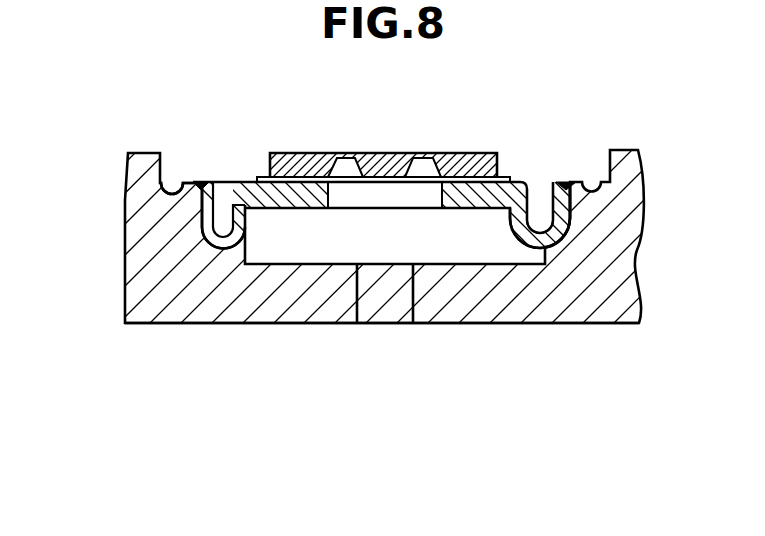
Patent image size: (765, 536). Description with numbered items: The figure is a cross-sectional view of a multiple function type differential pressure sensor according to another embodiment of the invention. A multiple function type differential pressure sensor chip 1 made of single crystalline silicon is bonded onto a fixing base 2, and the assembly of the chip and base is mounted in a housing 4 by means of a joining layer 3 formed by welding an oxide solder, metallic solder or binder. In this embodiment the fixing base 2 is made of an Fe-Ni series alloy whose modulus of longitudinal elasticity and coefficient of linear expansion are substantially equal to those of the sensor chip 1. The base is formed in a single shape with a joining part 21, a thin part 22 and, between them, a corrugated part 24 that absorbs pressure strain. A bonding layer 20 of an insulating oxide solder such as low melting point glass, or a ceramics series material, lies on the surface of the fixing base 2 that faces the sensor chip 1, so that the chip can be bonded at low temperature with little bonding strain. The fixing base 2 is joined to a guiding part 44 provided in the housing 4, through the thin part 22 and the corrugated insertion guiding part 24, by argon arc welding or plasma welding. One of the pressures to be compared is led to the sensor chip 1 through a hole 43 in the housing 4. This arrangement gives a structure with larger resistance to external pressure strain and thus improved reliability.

The multiple function type differential pressure sensor chip 1 is at (293, 177).
The fixing base 2 is at (452, 195).
The joining layer 3 is at (205, 183).
The housing 4 is at (526, 303).
The bonding layer 20 is at (503, 175).
The joining part 21 is at (302, 195).
The thin part 22 is at (202, 207).
The corrugated part 24 is at (266, 232).
The hole 43 is at (391, 305).
The guiding part 44 is at (548, 242).